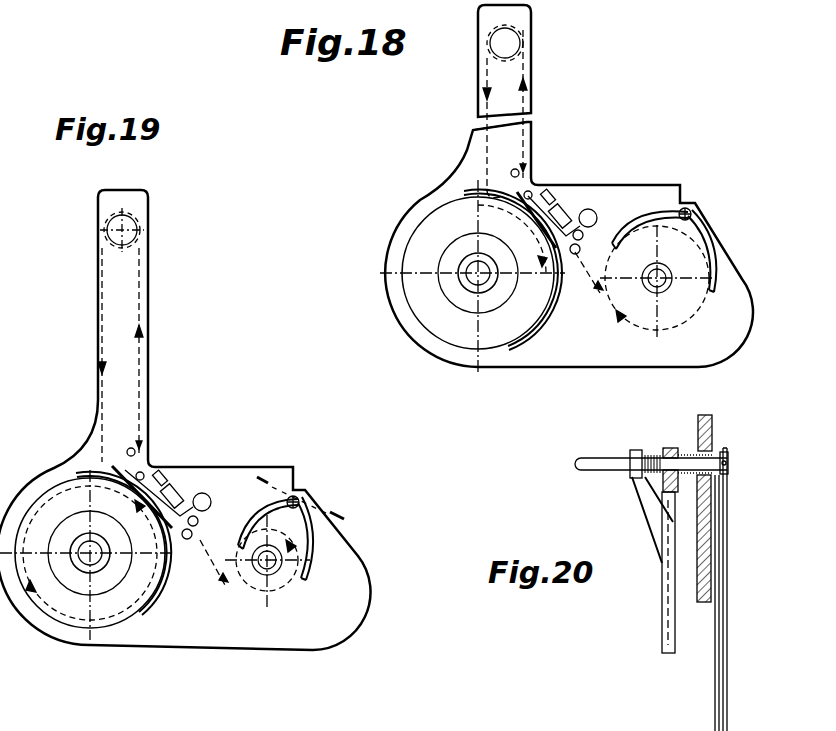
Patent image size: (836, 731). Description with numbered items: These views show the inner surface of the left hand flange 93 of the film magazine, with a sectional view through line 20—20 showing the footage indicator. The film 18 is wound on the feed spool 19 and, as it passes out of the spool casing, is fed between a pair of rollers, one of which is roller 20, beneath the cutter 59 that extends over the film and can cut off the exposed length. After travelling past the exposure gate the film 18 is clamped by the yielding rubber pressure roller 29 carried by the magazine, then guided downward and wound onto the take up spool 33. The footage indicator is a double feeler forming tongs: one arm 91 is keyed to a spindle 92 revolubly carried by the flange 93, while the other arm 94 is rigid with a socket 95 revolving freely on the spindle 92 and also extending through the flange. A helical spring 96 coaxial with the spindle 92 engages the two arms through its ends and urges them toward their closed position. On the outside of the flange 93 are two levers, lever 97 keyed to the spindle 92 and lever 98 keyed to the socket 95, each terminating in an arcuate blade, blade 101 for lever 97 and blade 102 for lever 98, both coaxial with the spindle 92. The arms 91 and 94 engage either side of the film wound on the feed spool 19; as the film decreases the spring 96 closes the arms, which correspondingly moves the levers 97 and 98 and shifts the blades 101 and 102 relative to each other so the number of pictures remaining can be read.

In FIG. 18, the film 18 is at (487, 58).
In FIG. 19, the film 18 is at (141, 424).
In FIG. 18, the feed spool 19 is at (695, 307).
In FIG. 19, the feed spool 19 is at (283, 588).
In FIG. 19, the roller 20 is at (309, 500).
In FIG. 18, the pressure roller 29 is at (512, 45).
In FIG. 19, the pressure roller 29 is at (132, 225).
In FIG. 18, the take up spool 33 is at (446, 330).
In FIG. 19, the take up spool 33 is at (110, 612).
In FIG. 18, the cutter 59 is at (572, 208).
In FIG. 19, the cutter 59 is at (190, 492).
In FIG. 18, the arm of feeler 91 is at (716, 256).
In FIG. 19, the arm of feeler 91 is at (312, 548).
In FIG. 20, the arm of feeler 91 is at (668, 592).
In FIG. 18, the spindle 92 is at (691, 213).
In FIG. 19, the spindle 92 is at (298, 504).
In FIG. 20, the spindle 92 is at (593, 470).
In FIG. 18, the flange of the magazine 93 is at (620, 188).
In FIG. 19, the flange of the magazine 93 is at (175, 640).
In FIG. 20, the flange of the magazine 93 is at (713, 432).
In FIG. 18, the arm of feeler 94 is at (656, 212).
In FIG. 19, the arm of feeler 94 is at (246, 540).
In FIG. 20, the arm of feeler 94 is at (668, 524).
In FIG. 20, the socket 95 is at (668, 452).
In FIG. 20, the helical spring 96 is at (650, 452).
In FIG. 20, the lever 97 is at (725, 558).
In FIG. 20, the lever 98 is at (715, 612).
In FIG. 20, the arcuate blade 101 is at (727, 716).
In FIG. 20, the arcuate blade 102 is at (717, 722).